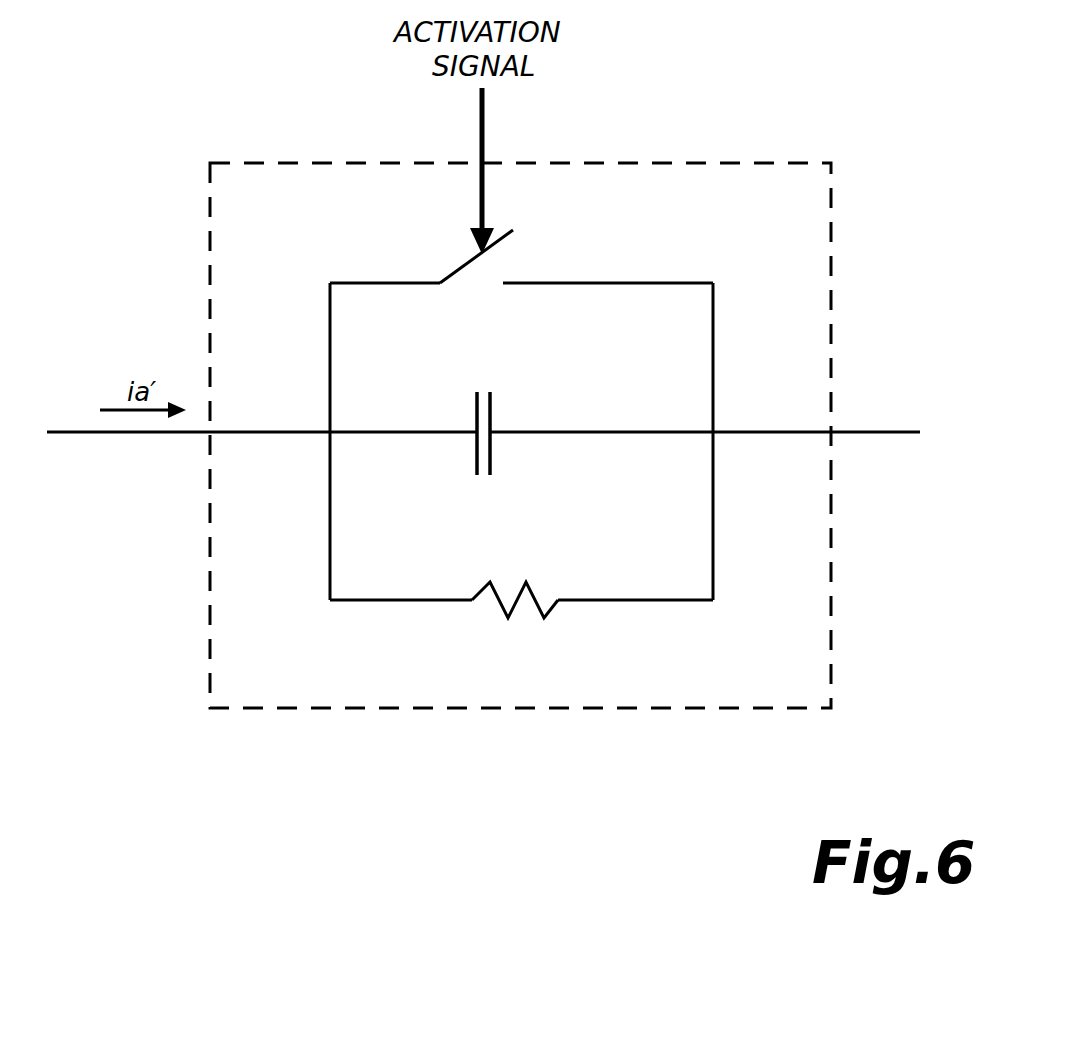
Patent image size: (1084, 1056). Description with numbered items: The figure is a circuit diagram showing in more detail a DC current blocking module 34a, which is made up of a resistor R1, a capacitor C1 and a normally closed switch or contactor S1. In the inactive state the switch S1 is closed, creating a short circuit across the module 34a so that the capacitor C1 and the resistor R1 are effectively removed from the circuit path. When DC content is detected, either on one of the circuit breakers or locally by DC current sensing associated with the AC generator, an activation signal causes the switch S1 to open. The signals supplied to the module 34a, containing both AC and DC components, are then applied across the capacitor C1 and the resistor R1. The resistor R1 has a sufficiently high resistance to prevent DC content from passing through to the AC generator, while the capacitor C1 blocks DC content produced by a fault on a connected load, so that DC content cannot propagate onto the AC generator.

The DC current blocking module 34a is at (266, 163).
The normally closed switch/contactor S1 is at (521, 256).
The capacitor C1 is at (488, 449).
The resistor R1 is at (521, 580).